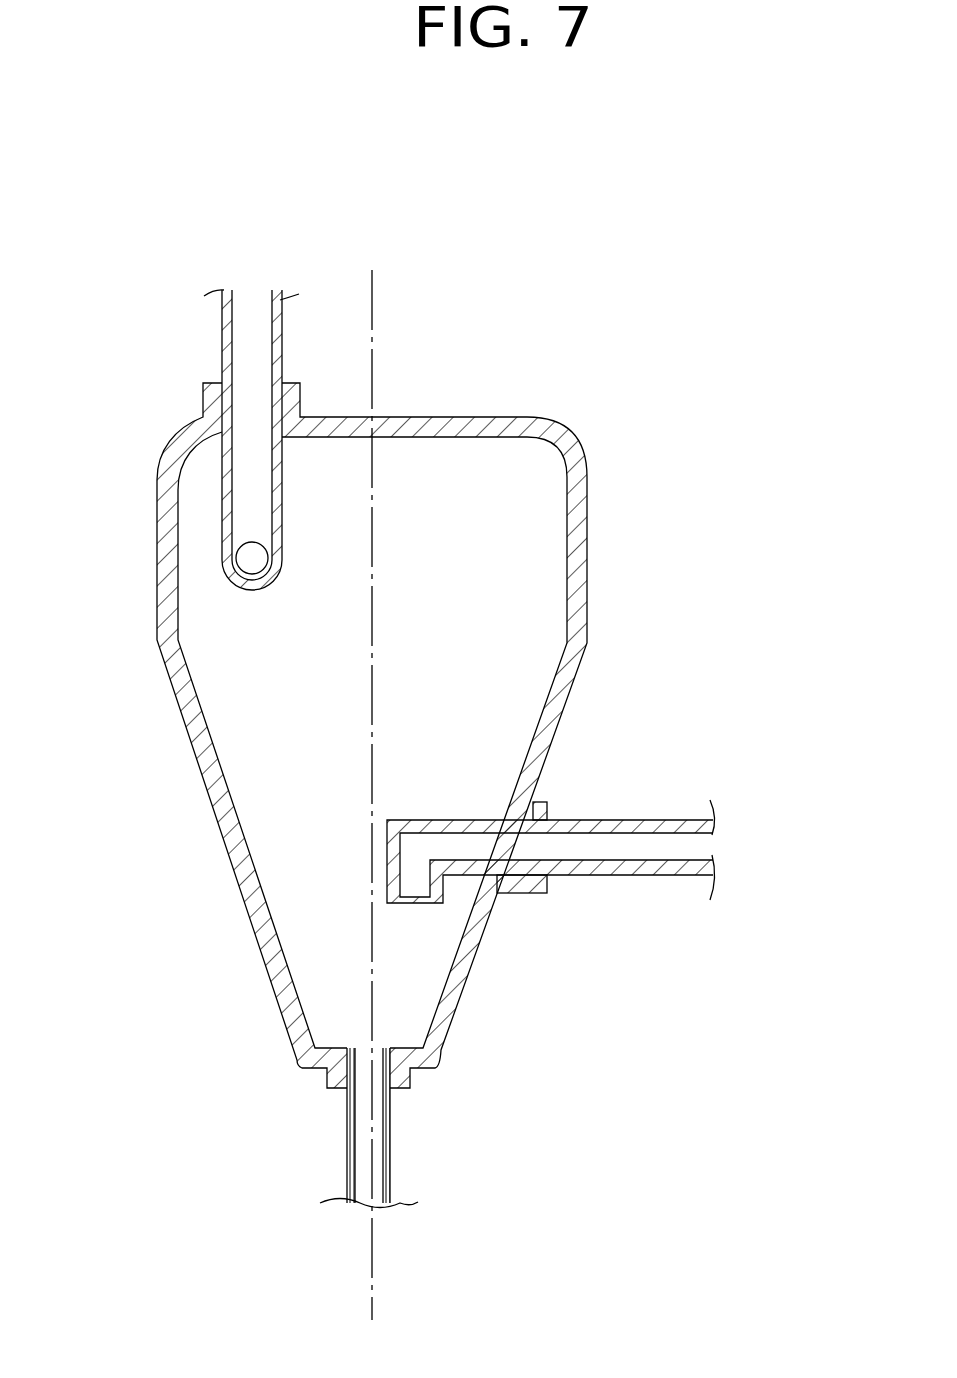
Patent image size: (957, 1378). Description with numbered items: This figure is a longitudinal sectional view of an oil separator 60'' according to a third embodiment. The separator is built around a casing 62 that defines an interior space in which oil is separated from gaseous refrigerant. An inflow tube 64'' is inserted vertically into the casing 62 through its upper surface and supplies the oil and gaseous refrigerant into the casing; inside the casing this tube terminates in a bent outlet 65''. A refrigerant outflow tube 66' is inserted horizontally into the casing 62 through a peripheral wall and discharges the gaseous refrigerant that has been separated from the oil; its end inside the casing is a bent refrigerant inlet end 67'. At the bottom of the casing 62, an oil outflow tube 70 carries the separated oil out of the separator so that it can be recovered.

The oil separator 60'' is at (416, 736).
The casing 62 is at (587, 560).
The inflow tube 64'' is at (189, 440).
The bent outlet 65'' is at (153, 595).
The refrigerant outflow tube 66' is at (551, 792).
The bent refrigerant inlet end 67' is at (535, 970).
The oil outflow tube 70 is at (390, 1137).